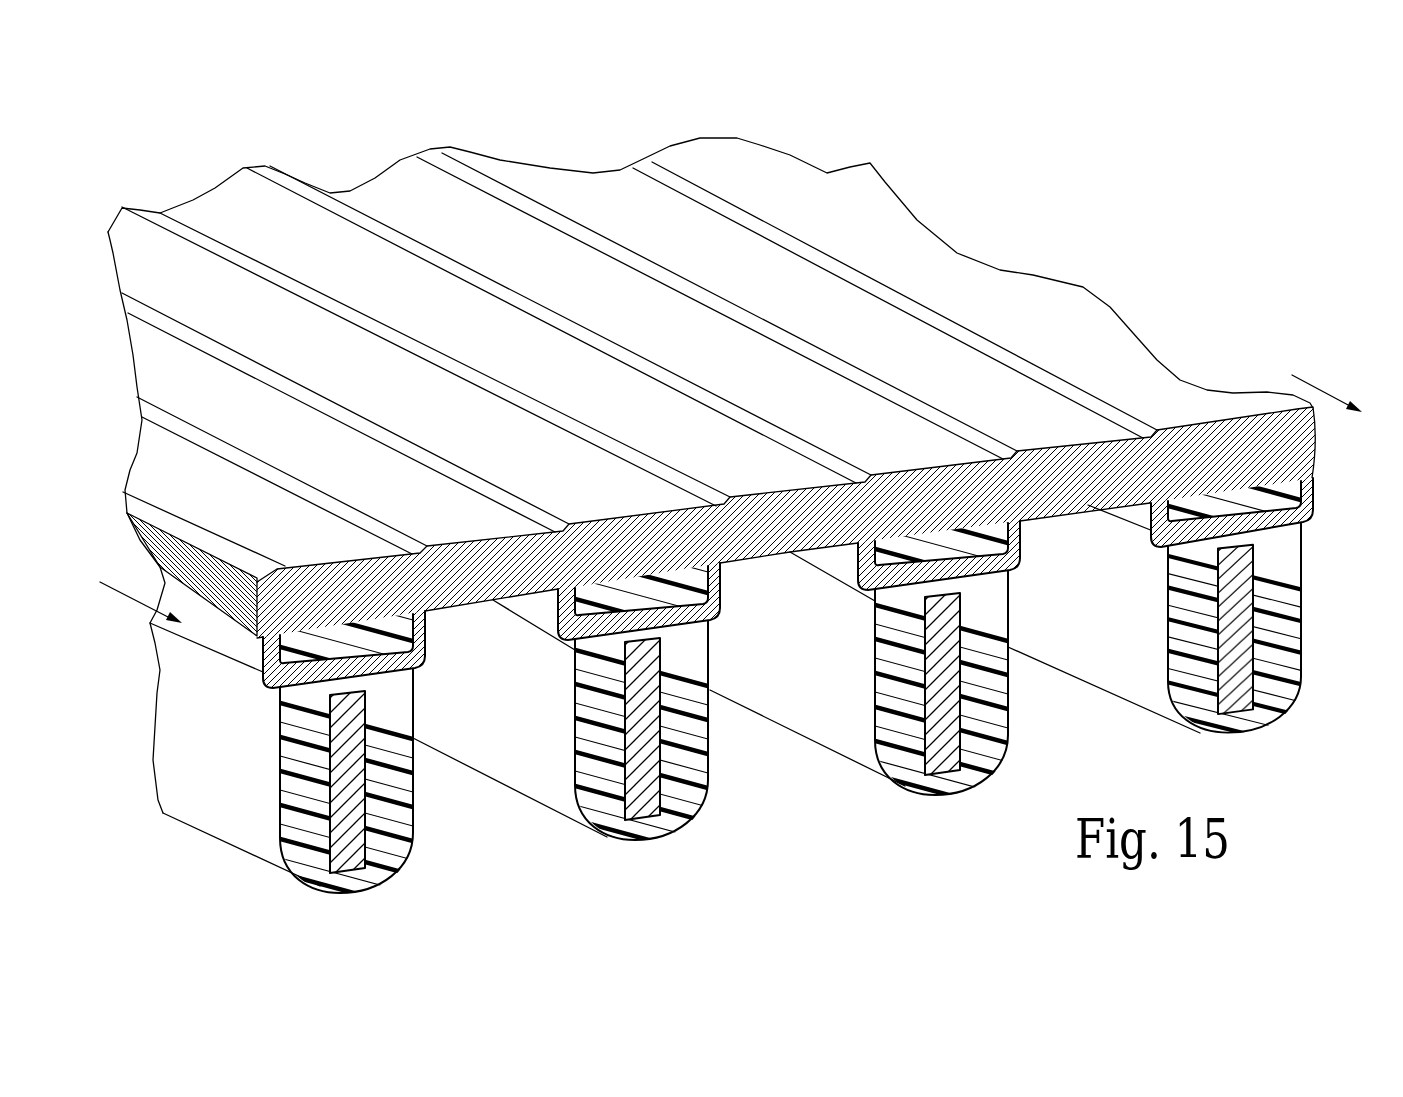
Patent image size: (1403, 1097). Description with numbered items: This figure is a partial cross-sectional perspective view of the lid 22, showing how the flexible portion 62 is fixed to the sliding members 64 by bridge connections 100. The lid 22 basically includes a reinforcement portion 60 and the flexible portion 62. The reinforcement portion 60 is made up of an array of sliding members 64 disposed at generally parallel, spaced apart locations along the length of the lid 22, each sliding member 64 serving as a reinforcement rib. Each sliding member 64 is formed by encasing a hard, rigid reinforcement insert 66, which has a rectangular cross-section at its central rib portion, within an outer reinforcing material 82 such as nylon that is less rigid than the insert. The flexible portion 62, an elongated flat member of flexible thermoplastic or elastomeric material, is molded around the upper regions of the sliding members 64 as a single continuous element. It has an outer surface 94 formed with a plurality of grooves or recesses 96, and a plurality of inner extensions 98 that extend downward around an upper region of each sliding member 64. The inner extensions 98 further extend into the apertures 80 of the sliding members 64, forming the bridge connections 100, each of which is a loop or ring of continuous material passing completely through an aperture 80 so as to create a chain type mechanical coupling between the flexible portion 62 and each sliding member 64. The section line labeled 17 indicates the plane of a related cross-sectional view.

The lid 22 is at (1158, 170).
The outer surface 94 is at (572, 197).
The flexible portion 62 is at (970, 240).
The grooves or recesses 96 is at (306, 503).
The section line 17- 17 is at (751, 509).
The reinforcement portion 60 is at (1318, 606).
The sliding member 64 is at (473, 873).
The outer reinforcing material 82 is at (397, 800).
The reinforcement insert 66 is at (357, 843).
The inner extension 98 is at (428, 641).
The bridge connection 100 is at (400, 700).
The aperture 80 is at (263, 682).